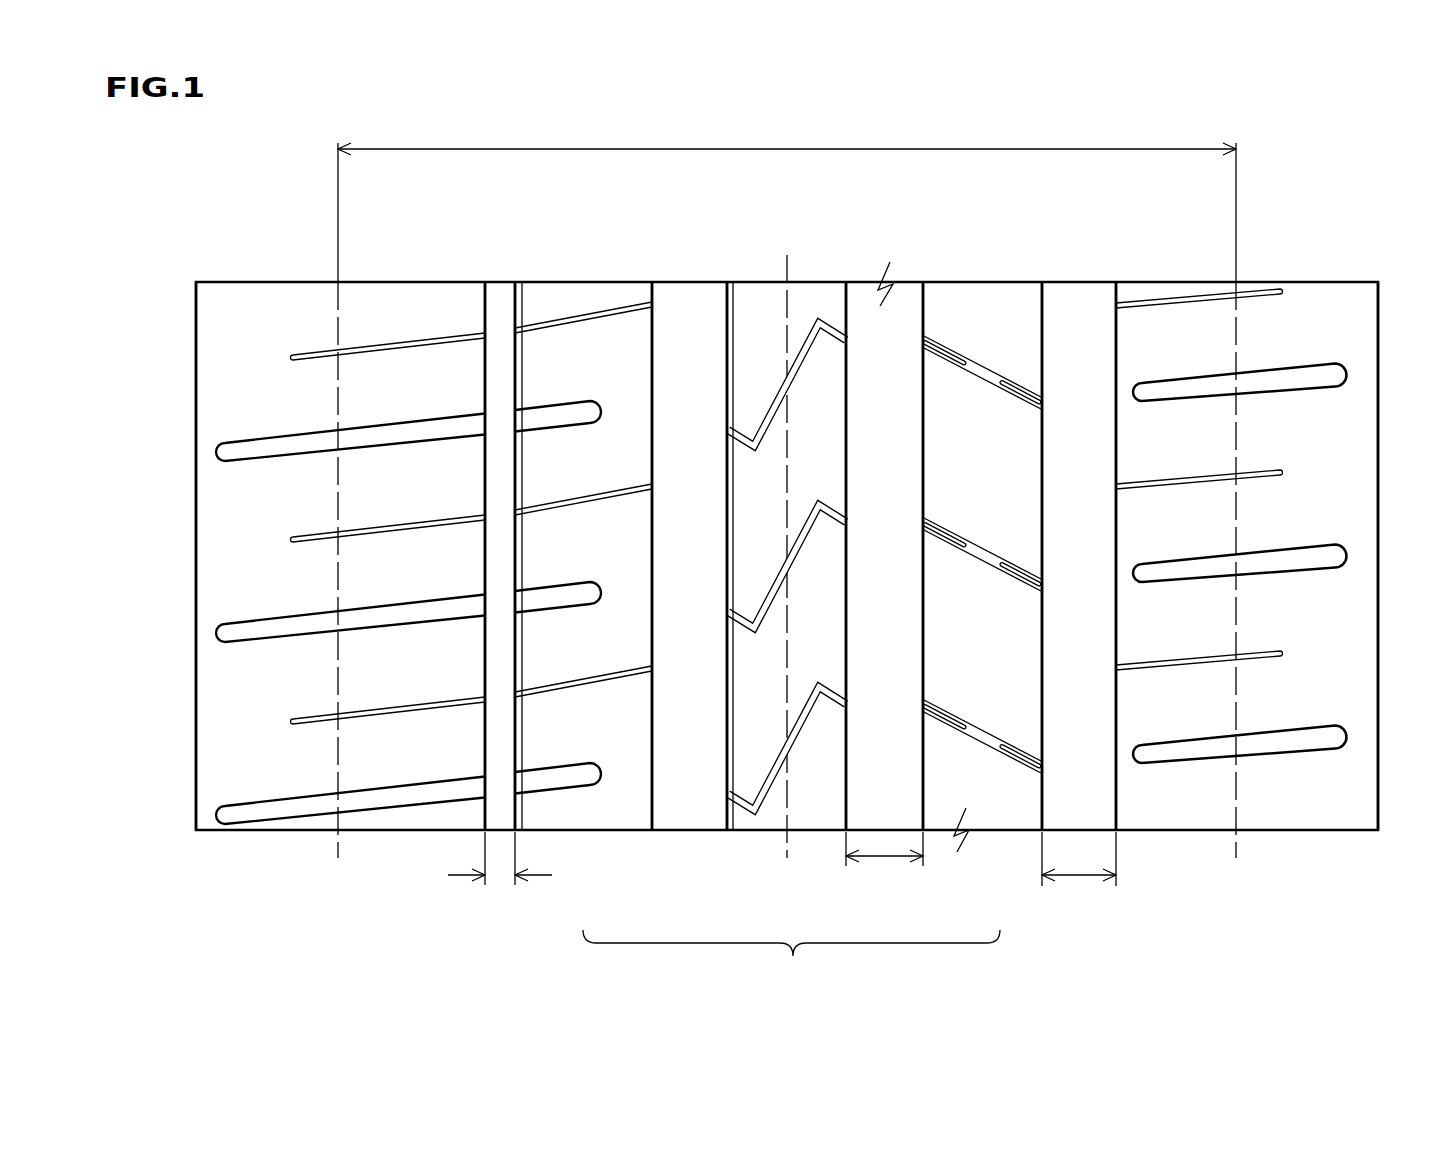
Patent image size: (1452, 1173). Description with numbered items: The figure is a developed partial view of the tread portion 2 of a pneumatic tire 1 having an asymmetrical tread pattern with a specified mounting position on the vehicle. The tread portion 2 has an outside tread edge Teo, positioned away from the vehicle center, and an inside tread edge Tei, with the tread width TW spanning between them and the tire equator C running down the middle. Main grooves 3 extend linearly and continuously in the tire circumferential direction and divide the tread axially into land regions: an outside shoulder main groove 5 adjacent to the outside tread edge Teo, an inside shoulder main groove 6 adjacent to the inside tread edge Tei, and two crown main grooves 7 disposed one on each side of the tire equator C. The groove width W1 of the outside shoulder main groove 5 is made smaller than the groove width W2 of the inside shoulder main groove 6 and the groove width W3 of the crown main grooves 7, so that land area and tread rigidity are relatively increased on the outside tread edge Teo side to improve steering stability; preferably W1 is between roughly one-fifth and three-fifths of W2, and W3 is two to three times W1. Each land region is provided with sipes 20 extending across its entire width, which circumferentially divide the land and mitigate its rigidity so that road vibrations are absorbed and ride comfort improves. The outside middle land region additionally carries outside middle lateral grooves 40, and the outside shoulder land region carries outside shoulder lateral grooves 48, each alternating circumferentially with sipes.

The pneumatic tire 1 is at (904, 278).
The tread portion 2 is at (672, 278).
The main grooves 3 is at (791, 961).
The outside shoulder main groove 5 is at (500, 805).
The inside shoulder main groove 6 is at (1078, 782).
The crown main grooves 7 is at (692, 760).
The sipes 20 is at (545, 320).
The outside middle lateral grooves 40 is at (550, 598).
The outside shoulder lateral grooves 48 is at (412, 436).
The tread width TW is at (787, 196).
The outside tread edge Teo is at (338, 322).
The inside tread edge Tei is at (1236, 345).
The tire equator C is at (787, 540).
The groove width of the outside shoulder main groove W1 is at (500, 871).
The groove width of the inside shoulder main groove W2 is at (1079, 872).
The groove width of the crown main grooves W3 is at (884, 862).